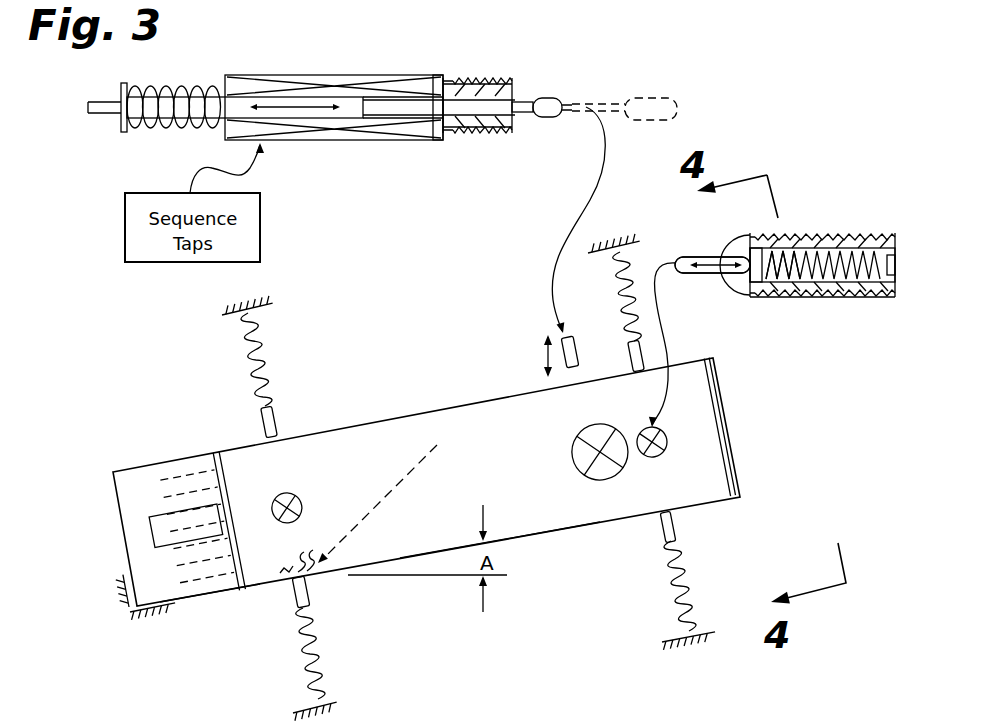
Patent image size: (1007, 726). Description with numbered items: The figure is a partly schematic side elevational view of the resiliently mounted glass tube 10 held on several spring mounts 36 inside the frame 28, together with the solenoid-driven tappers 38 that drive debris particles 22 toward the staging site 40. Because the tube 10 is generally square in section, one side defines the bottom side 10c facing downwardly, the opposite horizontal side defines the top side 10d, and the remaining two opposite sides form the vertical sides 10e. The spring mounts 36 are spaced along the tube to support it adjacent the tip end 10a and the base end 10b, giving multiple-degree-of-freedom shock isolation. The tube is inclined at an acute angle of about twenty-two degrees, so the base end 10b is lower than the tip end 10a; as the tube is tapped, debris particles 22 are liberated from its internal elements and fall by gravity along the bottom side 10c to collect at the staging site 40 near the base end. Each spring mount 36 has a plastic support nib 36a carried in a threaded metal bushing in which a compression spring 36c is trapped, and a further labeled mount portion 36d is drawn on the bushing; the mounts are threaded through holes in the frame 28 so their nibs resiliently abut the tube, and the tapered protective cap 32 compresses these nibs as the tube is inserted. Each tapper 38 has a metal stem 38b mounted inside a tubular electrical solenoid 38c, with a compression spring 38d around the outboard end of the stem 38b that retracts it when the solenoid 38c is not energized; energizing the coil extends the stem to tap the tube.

The tube 10 is at (358, 421).
The tip end 10a is at (732, 457).
The base end 10b is at (208, 454).
The bottom side 10c is at (541, 538).
The top side 10d is at (437, 452).
The vertical sides 10e is at (351, 464).
The debris particles 22 is at (285, 578).
The frame 28 is at (122, 604).
The protective cap 32 is at (202, 600).
The spring mounts 36 is at (280, 495).
The support nib 36a is at (692, 257).
The compression spring 36c is at (838, 273).
The threaded pin housing 36d is at (795, 293).
The tappers 38 is at (394, 150).
The stem 38b is at (233, 100).
The electrical solenoid 38c is at (328, 78).
The compression spring 38d is at (147, 88).
The staging site 40 is at (322, 566).